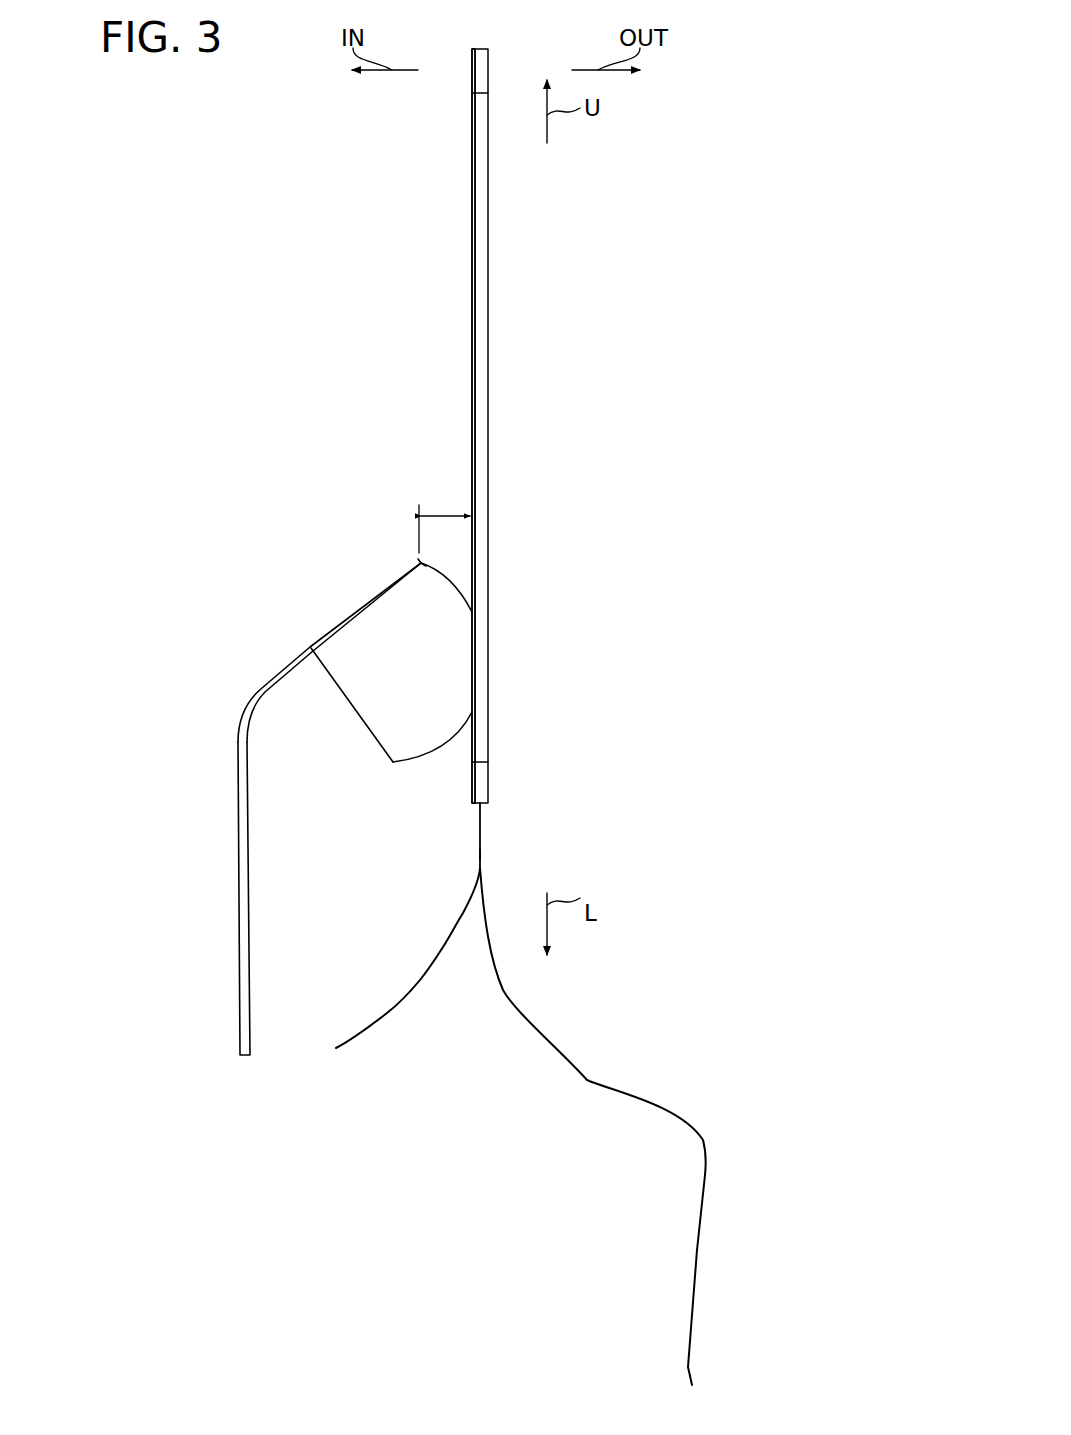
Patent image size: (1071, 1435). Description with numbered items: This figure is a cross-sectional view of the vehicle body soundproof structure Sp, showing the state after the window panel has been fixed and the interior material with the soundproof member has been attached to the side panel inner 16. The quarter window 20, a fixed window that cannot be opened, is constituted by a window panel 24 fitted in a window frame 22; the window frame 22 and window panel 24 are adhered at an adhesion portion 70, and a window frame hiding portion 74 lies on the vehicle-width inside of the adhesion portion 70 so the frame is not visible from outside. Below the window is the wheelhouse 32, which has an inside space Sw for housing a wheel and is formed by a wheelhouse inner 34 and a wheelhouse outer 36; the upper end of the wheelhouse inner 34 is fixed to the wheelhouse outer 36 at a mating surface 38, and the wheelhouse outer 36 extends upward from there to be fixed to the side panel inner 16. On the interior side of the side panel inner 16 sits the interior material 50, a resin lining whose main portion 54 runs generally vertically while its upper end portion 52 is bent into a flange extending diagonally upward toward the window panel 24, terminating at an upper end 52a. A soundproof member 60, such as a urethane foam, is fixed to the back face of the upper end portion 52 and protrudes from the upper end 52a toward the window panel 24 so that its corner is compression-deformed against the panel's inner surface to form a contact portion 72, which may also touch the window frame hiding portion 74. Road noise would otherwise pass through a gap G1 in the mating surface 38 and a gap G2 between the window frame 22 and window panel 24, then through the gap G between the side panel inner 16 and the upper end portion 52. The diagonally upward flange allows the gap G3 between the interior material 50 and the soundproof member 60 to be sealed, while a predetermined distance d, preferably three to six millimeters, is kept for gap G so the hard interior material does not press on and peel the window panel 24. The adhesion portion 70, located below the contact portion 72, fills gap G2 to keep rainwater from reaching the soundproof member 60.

The side panel inner 16 is at (483, 833).
The quarter window 20 is at (575, 322).
The window frame 22 is at (490, 60).
The window panel 24 is at (482, 262).
The wheelhouse 32 is at (550, 974).
The wheelhouse inner 34 is at (380, 1007).
The wheelhouse outer 36 is at (587, 1080).
The mating surface 38 is at (478, 852).
The interior material 50 is at (261, 801).
The upper end portion 52 is at (338, 618).
The upper end 52a is at (416, 561).
The main portion 54 is at (240, 932).
The soundproof member 60 is at (387, 687).
The adhesion portion 70 is at (482, 760).
The contact portion 72 is at (482, 641).
The window frame hiding portion 74 is at (470, 51).
The gap G is at (446, 565).
The gap G1 is at (478, 832).
The gap G2 is at (487, 760).
The gap G3 is at (372, 598).
The predetermined distance d is at (441, 516).
The vehicle body soundproof structure Sp is at (344, 514).
The inside space Sw is at (632, 1203).